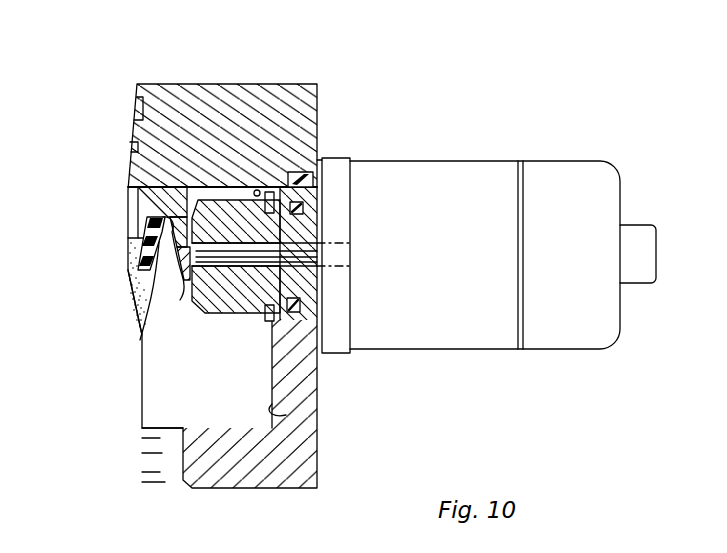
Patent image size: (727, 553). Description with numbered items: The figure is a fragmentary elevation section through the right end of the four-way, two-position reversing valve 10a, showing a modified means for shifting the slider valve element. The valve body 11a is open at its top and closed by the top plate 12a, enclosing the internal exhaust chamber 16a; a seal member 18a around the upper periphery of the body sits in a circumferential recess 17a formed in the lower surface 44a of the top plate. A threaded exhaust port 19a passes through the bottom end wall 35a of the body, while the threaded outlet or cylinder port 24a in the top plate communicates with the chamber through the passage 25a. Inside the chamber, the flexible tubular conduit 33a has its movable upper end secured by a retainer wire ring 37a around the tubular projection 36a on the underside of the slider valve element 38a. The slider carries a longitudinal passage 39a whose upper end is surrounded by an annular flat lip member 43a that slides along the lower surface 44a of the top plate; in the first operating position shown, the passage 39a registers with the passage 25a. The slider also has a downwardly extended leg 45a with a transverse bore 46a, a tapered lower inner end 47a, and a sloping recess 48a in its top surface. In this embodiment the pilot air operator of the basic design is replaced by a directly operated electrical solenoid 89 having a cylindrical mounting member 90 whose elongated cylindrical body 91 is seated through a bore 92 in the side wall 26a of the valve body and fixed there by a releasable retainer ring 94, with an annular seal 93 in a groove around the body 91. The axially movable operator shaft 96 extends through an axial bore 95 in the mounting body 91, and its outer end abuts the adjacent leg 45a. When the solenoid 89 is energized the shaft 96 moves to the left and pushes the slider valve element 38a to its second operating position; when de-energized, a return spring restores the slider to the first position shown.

The valve 10a is at (317, 108).
The valve body 11a is at (317, 458).
The top plate 12a is at (303, 132).
The exhaust chamber 16a is at (286, 415).
The recess 17a is at (313, 178).
The seal member 18a is at (318, 157).
The exhaust port 19a is at (182, 458).
The outlet or cylinder port 24a is at (141, 120).
The passage 25a is at (129, 157).
The side wall 26a is at (305, 396).
The flexible tubular conduit 33a is at (138, 298).
The bottom end wall 35a is at (232, 470).
The tubular projection 36a is at (143, 250).
The retainer wire ring 37a is at (194, 224).
The slider valve element 38a is at (138, 212).
The passage 39a is at (144, 230).
The annular flat lip member 43a is at (135, 180).
The lower surface 44a is at (259, 191).
The leg 45a is at (180, 262).
The transverse bore 46a is at (186, 278).
The tapered lower inner end 47a is at (152, 296).
The sloping recess 48a is at (176, 190).
The solenoid 89 is at (567, 160).
The solenoid mounting member 90 is at (250, 316).
The cylindrical body 91 is at (226, 312).
The bore 92 is at (302, 305).
The annular seal 93 is at (306, 292).
The retainer ring 94 is at (274, 318).
The axial bore 95 is at (316, 242).
The operator shaft 96 is at (250, 246).